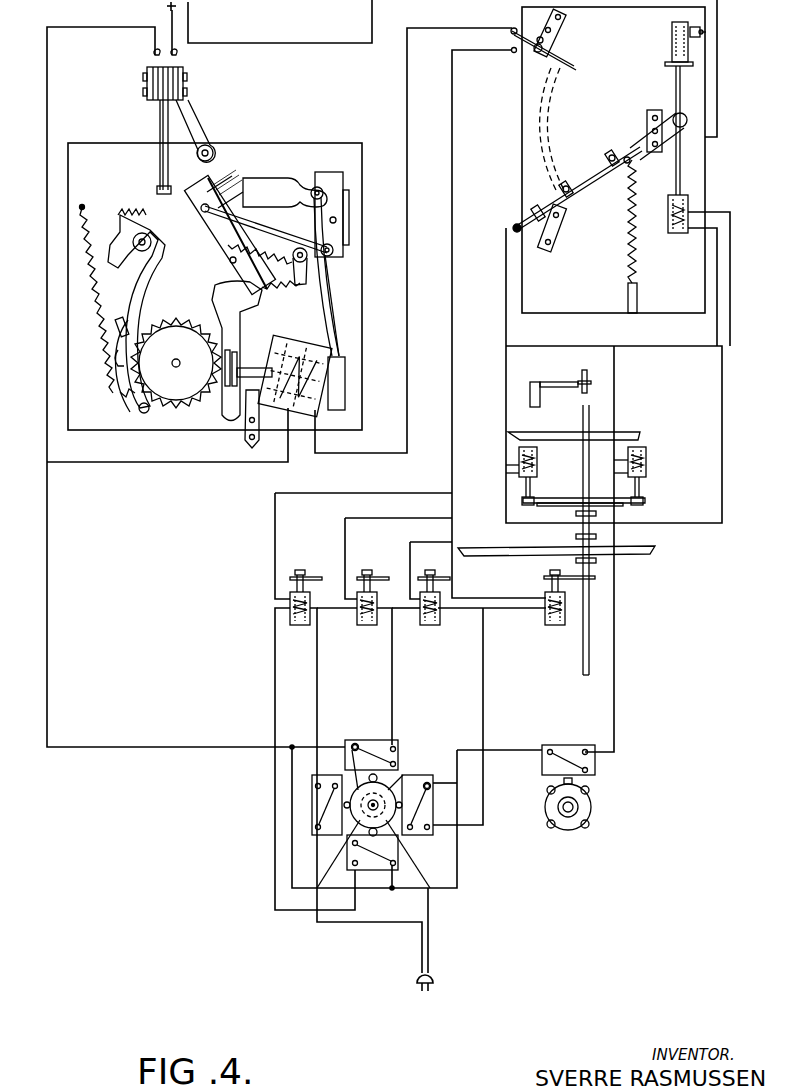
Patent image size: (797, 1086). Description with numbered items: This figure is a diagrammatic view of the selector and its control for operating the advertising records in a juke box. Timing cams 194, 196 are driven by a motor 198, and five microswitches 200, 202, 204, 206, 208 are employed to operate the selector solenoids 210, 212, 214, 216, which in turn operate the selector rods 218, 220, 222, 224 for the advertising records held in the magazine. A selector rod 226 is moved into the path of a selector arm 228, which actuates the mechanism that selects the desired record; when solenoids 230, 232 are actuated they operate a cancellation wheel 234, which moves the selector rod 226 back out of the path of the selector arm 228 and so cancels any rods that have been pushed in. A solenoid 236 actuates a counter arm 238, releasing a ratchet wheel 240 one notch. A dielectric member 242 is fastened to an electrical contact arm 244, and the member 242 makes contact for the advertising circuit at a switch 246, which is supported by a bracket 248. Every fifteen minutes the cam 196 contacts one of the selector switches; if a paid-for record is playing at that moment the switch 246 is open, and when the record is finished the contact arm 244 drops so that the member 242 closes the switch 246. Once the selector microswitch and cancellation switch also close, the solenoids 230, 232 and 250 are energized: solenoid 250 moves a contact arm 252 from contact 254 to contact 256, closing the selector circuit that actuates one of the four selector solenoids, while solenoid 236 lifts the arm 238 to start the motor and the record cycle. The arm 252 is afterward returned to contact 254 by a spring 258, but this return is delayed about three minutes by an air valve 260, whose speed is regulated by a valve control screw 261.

The timing cam 194 is at (576, 830).
The timing cam 196 is at (413, 775).
The motor 198 is at (354, 745).
The microswitch 200 is at (378, 865).
The microswitch 202 is at (312, 805).
The microswitch 204 is at (372, 735).
The microswitch 206 is at (433, 839).
The microswitch 208 is at (550, 762).
The selector solenoid 210 is at (432, 625).
The selector solenoid 212 is at (365, 625).
The selector solenoid 214 is at (298, 625).
The selector solenoid 216 is at (552, 625).
The selector rod 218 is at (544, 577).
The selector rod 220 is at (446, 580).
The selector rod 222 is at (378, 577).
The selector rod 224 is at (310, 577).
The selector rod 226 is at (590, 627).
The selector arm 228 is at (562, 378).
The solenoid 230 is at (647, 458).
The solenoid 232 is at (537, 456).
The cancellation wheel 234 is at (593, 497).
The solenoid 236 is at (312, 408).
The counter arm 238 is at (231, 403).
The ratchet wheel 240 is at (172, 395).
The dielectric member 242 is at (178, 232).
The electrical contact arm 244 is at (220, 258).
The switch 246 is at (157, 188).
The bracket 248 is at (195, 130).
The solenoid 250 is at (680, 234).
The contact arm 252 is at (638, 150).
The contact 254 is at (556, 218).
The contact 256 is at (557, 52).
The spring 258 is at (636, 278).
The air valve 260 is at (672, 42).
The valve control screw 261 is at (706, 30).